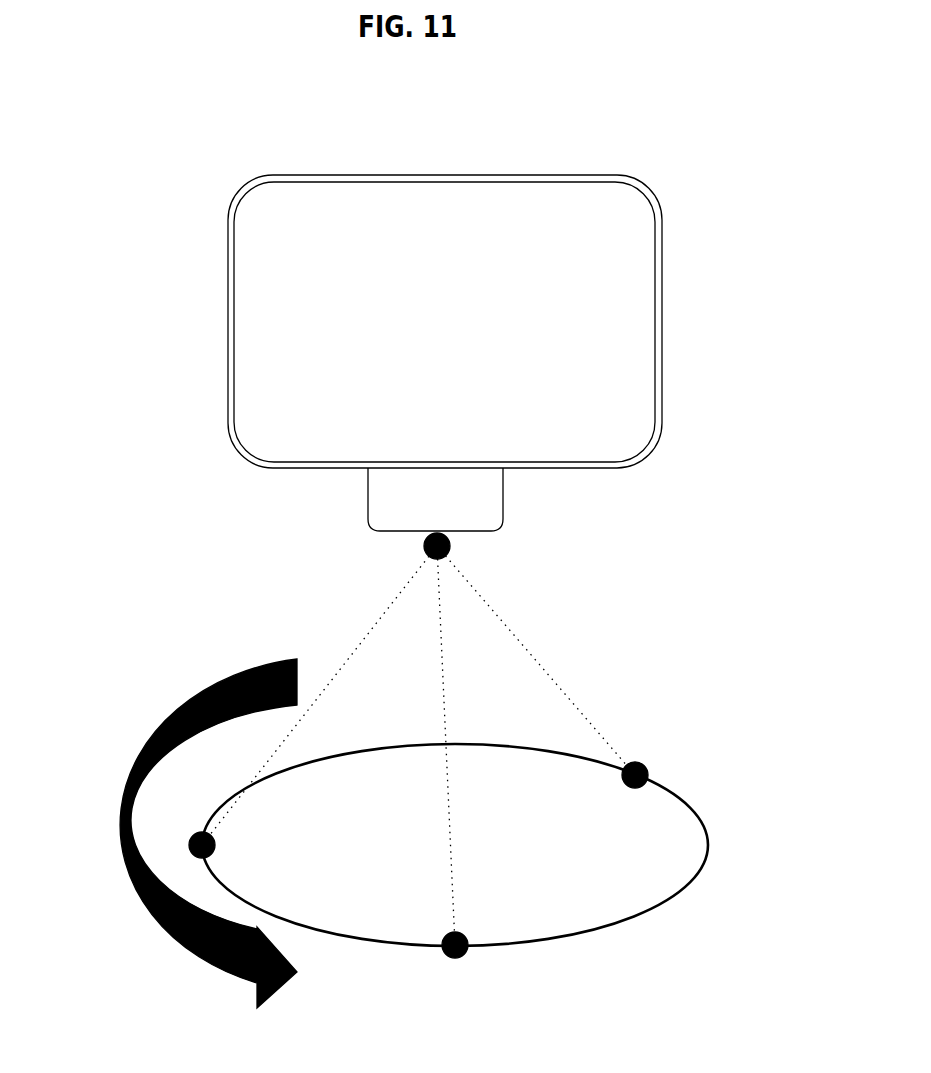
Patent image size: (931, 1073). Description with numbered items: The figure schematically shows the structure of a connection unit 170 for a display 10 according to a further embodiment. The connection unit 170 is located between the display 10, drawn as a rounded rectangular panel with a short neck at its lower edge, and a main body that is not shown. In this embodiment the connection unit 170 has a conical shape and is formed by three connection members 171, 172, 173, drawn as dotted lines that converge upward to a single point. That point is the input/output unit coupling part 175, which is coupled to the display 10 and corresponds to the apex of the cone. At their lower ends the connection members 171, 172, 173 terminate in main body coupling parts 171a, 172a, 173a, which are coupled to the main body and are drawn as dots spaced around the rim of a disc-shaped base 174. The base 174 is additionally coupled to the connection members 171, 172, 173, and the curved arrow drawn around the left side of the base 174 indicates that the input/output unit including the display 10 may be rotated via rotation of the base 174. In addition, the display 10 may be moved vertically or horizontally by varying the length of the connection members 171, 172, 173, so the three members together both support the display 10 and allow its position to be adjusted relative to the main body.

The display 10 is at (628, 353).
The connection unit 170 is at (381, 804).
The connection member 171 is at (545, 668).
The connection member 172 is at (377, 621).
The connection member 173 is at (448, 817).
The disc-shaped base 174 is at (570, 938).
The input/output unit coupling part 175 is at (455, 531).
The main body coupling part 171a is at (648, 765).
The main body coupling part 172a is at (188, 848).
The main body coupling part 173a is at (455, 960).